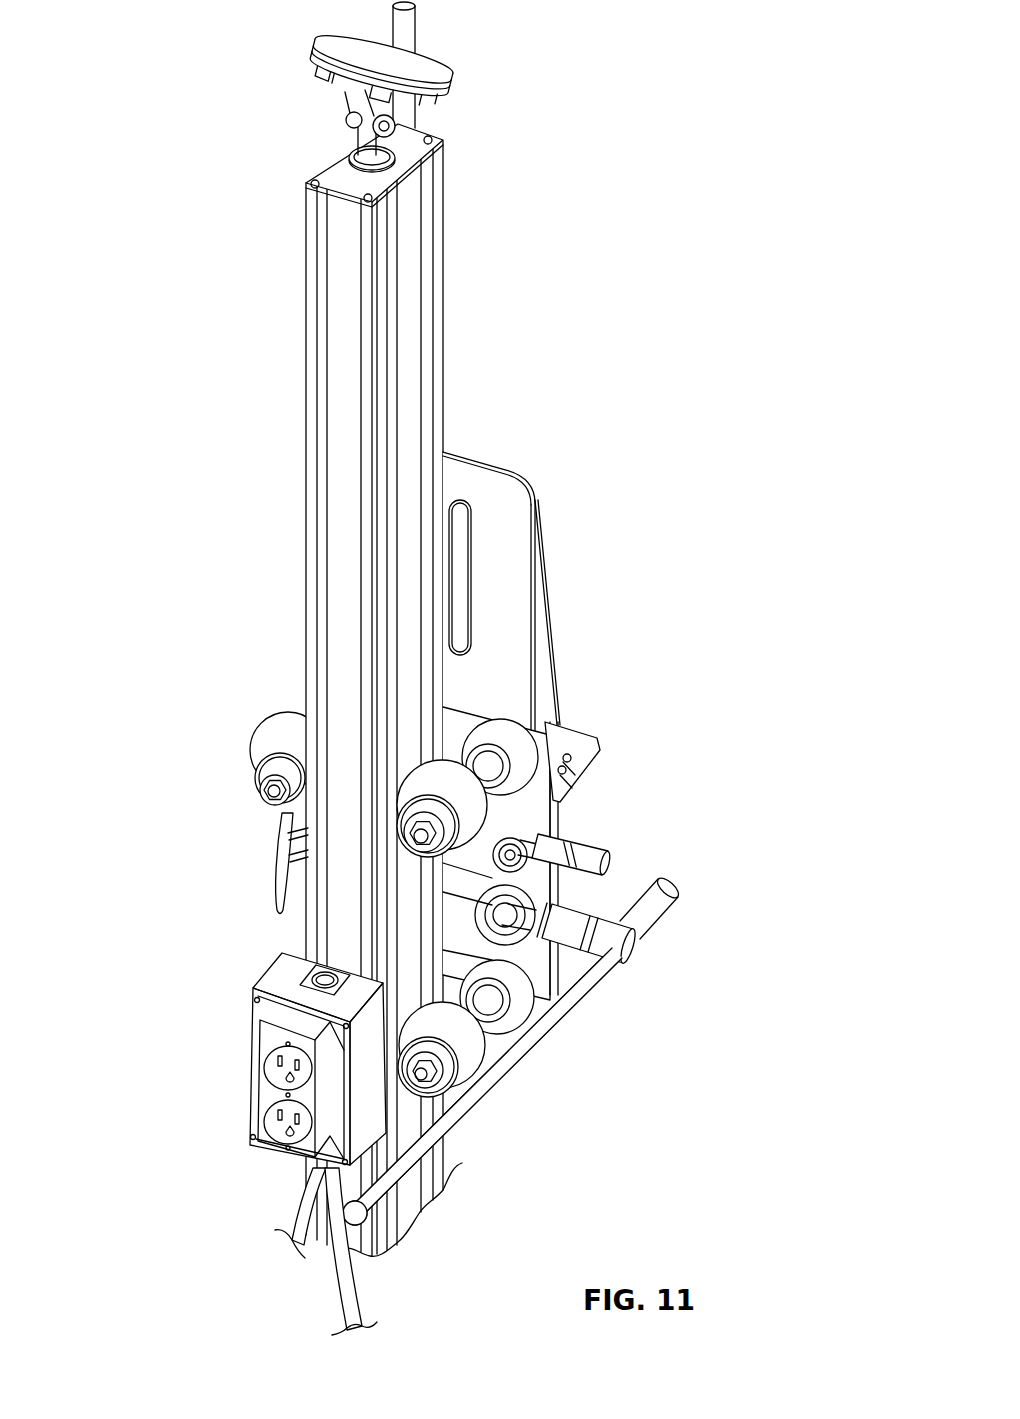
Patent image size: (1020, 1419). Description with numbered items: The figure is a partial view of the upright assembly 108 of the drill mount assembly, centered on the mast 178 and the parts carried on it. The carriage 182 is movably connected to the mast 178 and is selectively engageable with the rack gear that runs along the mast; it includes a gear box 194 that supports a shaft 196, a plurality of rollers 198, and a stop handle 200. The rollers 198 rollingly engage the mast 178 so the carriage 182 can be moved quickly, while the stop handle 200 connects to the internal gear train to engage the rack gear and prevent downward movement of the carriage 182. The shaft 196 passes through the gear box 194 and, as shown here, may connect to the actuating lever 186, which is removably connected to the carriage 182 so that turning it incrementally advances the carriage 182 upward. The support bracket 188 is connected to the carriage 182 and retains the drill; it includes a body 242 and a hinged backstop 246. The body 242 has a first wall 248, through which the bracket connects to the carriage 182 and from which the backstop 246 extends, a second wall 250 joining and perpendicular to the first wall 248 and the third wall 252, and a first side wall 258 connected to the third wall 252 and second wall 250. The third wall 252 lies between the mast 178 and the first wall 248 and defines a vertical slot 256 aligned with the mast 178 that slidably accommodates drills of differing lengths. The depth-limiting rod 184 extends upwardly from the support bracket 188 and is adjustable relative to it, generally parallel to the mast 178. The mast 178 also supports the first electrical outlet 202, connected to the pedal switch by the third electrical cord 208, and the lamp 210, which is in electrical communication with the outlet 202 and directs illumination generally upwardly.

The upright assembly 108 is at (435, 667).
The mast 178 is at (427, 215).
The carriage 182 is at (616, 1008).
The depth-limiting rod 184 is at (407, 33).
The actuating lever 186 is at (530, 1037).
The support bracket 188 is at (431, 563).
The gear box 194 is at (553, 778).
The shaft 196 is at (605, 870).
The plurality of rollers 198 is at (300, 723).
The stop handle 200 is at (277, 848).
The first electrical outlet 202 is at (265, 1093).
The third electrical cord 208 is at (343, 1287).
The lamp 210 is at (308, 60).
The body 242 is at (553, 812).
The backstop 246 is at (568, 745).
The first wall 248 is at (457, 728).
The second wall 250 is at (553, 723).
The third wall 252 is at (482, 485).
The slot 256 is at (450, 563).
The first side wall 258 is at (537, 640).